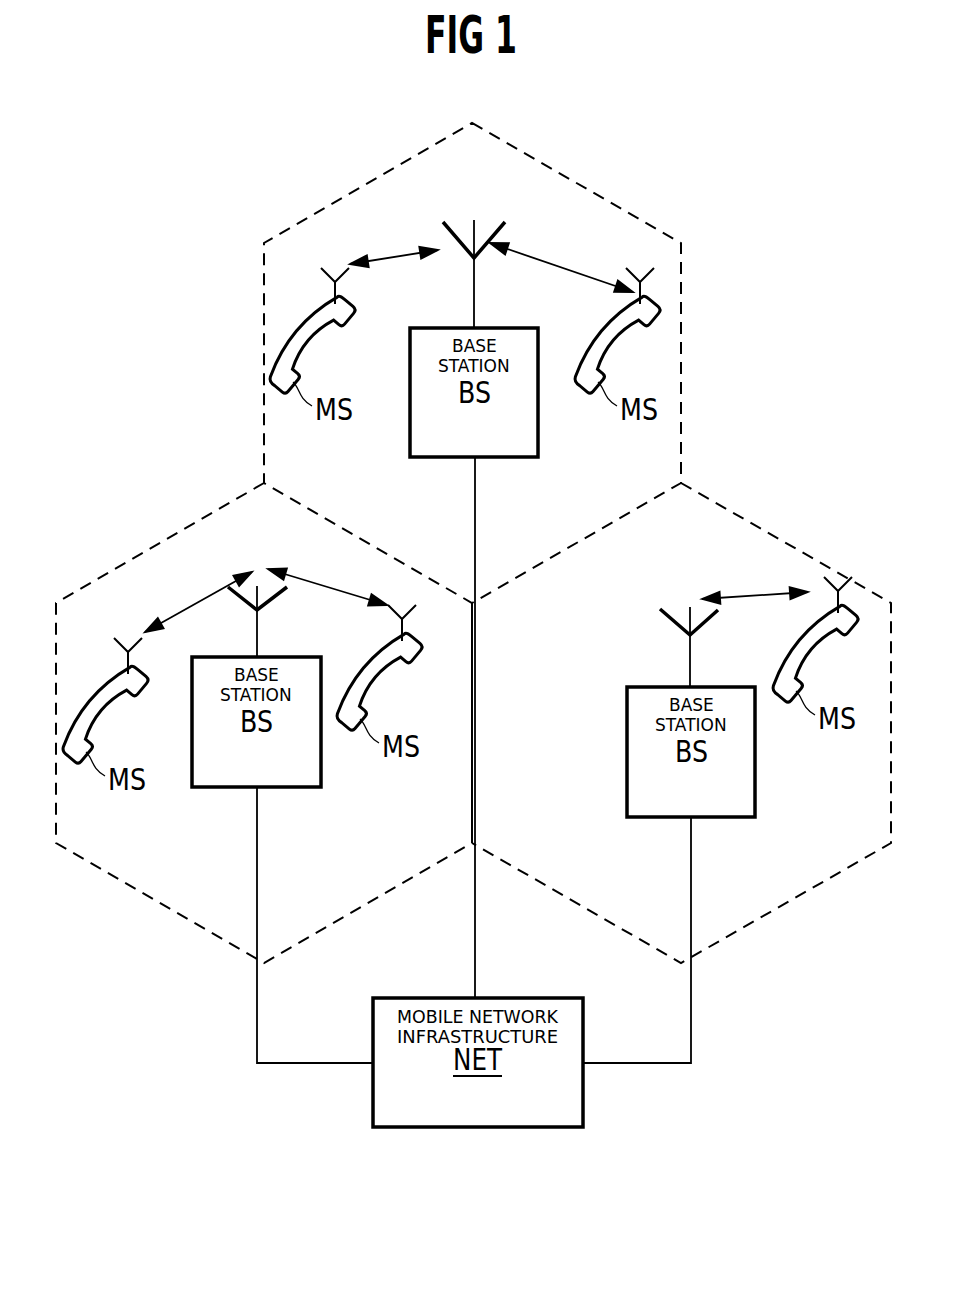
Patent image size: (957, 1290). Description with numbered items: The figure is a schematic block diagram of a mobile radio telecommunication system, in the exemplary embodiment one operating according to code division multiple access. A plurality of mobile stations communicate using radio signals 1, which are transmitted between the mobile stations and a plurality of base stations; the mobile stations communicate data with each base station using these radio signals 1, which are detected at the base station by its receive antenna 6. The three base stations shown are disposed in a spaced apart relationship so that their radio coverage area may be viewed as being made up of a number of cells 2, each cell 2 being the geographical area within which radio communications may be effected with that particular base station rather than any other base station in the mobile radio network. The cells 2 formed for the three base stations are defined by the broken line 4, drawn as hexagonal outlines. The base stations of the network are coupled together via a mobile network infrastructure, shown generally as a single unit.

The radio signals 1 is at (379, 259).
The cells 2 is at (564, 514).
The broken line 4 is at (473, 543).
The receive antenna 6 is at (475, 222).